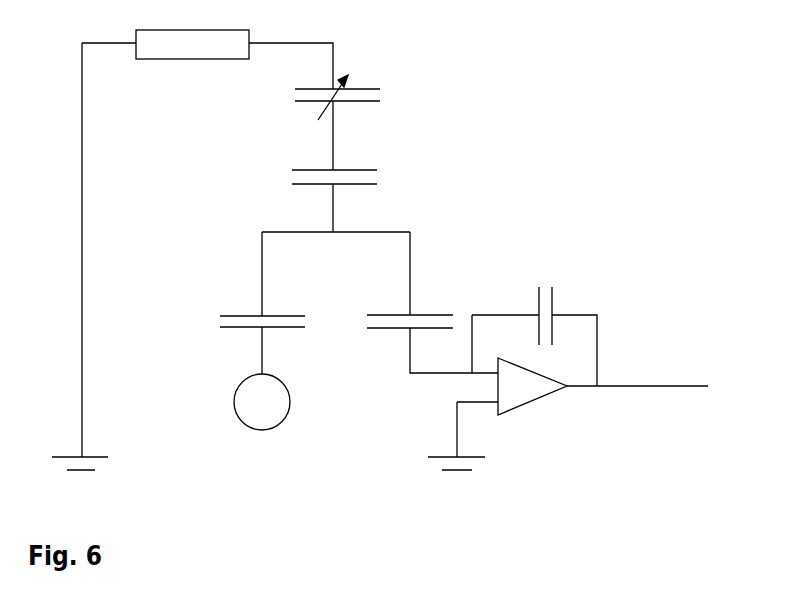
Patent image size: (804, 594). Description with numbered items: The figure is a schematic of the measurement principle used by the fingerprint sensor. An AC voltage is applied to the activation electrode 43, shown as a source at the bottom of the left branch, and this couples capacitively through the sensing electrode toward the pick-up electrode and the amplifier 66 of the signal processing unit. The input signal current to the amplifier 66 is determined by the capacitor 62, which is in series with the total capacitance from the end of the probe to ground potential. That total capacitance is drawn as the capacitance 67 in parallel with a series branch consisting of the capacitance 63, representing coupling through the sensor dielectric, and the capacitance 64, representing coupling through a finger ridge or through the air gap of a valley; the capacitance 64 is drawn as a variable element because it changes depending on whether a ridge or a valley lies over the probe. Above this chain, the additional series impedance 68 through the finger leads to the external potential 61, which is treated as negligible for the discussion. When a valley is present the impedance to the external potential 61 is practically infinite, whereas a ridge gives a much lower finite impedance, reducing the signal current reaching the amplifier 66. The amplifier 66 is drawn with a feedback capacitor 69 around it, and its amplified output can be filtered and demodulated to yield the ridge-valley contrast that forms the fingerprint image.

The series impedance 68 is at (192, 68).
The capacitance 64 is at (358, 89).
The series capacitance 63 is at (356, 176).
The capacitor 62 is at (238, 312).
The activation electrode 43 is at (281, 402).
The capacitance 67 is at (397, 303).
The feedback capacitor 69 is at (563, 297).
The amplifier 66 is at (533, 400).
The external potential 61 is at (90, 442).